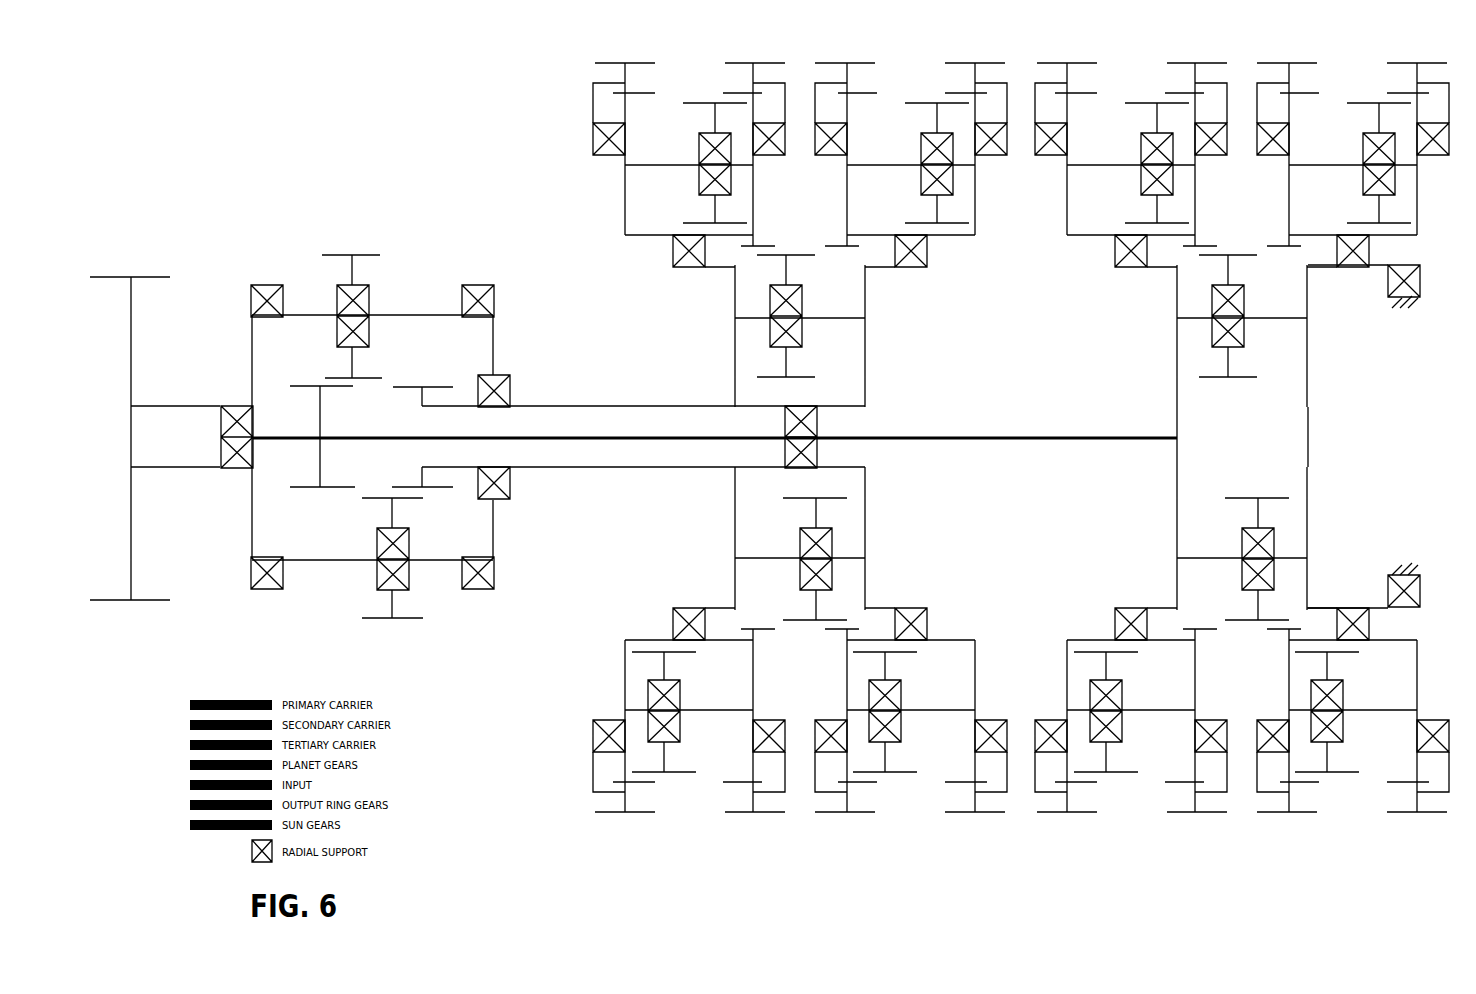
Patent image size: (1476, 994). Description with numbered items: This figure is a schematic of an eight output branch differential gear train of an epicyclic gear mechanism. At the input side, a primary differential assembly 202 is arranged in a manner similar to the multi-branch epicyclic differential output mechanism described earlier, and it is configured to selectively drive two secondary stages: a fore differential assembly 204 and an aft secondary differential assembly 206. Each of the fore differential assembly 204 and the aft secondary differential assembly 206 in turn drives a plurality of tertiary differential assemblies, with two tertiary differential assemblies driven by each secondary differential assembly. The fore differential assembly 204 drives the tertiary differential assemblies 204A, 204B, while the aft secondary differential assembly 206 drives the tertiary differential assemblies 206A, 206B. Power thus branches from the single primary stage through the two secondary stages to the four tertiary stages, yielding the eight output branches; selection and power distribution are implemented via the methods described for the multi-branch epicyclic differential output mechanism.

The primary differential assembly 202 is at (243, 625).
The fore differential assembly 204 is at (667, 635).
The tertiary differential assembly 204A is at (585, 842).
The tertiary differential assembly 204B is at (807, 842).
The aft secondary differential assembly 206 is at (1112, 635).
The tertiary differential assembly 206A is at (1028, 842).
The tertiary differential assembly 206B is at (1250, 842).